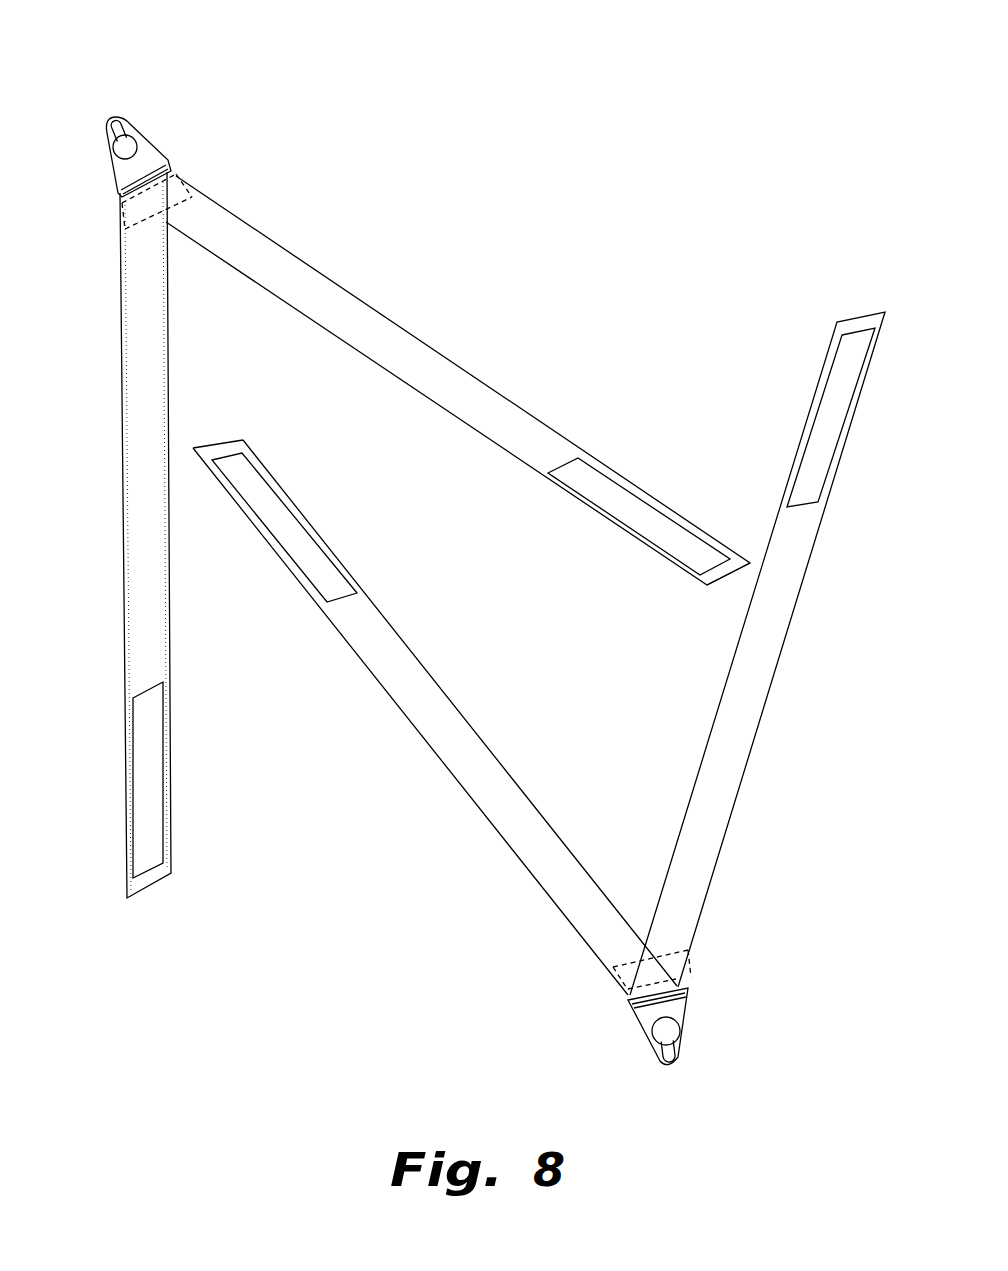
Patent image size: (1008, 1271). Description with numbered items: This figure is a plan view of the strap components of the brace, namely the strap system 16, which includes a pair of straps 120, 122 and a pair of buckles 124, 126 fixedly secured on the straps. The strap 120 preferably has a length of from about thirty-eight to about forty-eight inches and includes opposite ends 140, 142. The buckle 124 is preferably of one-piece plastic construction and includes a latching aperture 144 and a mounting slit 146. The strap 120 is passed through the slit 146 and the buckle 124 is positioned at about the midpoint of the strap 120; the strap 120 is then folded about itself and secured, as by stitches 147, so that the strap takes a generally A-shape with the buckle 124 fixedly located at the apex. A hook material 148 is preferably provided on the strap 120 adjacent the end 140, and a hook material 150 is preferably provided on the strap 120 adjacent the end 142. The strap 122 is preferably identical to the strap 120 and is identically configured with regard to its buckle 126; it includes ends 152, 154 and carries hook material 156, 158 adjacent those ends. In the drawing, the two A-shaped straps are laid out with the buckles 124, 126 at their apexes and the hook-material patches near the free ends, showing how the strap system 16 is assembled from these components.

The strap system 16 is at (618, 282).
The strap 120 is at (385, 320).
The strap 122 is at (470, 722).
The buckle 124 is at (150, 158).
The buckle 126 is at (677, 1010).
The end 140 is at (170, 840).
The end 142 is at (715, 580).
The latching aperture 144 is at (122, 138).
The mounting slit 146 is at (170, 164).
The stitches 147 is at (95, 307).
The hook material 148 is at (150, 767).
The hook material 150 is at (635, 500).
The end 152 is at (855, 318).
The end 154 is at (228, 445).
The hook material 156 is at (822, 428).
The hook material 158 is at (300, 535).